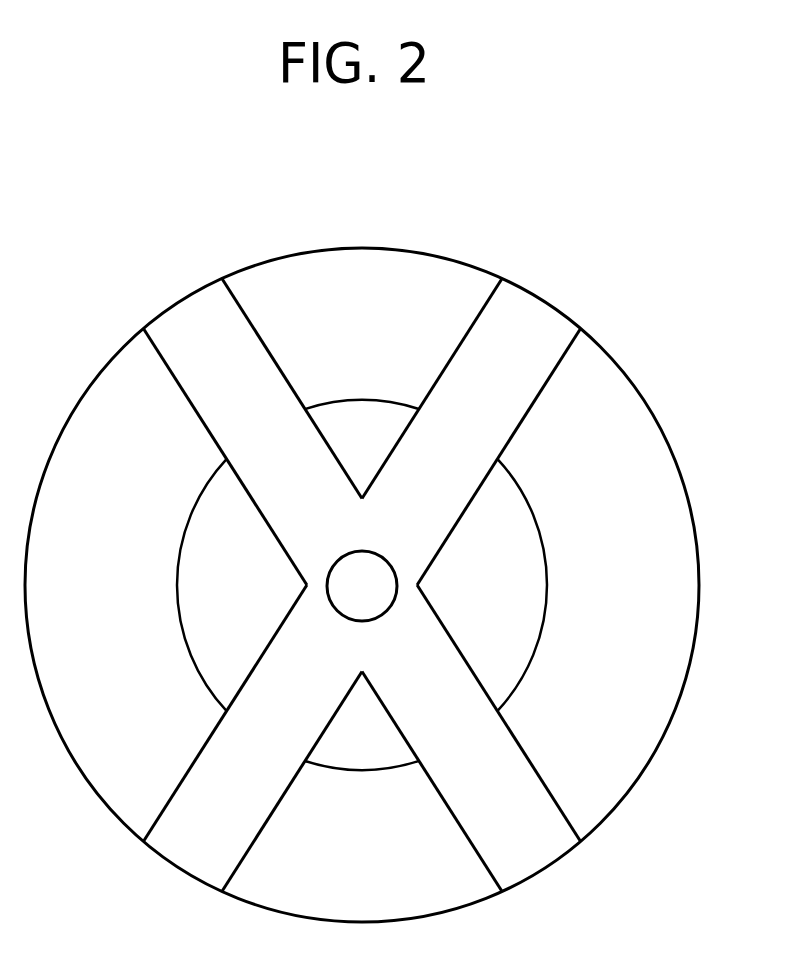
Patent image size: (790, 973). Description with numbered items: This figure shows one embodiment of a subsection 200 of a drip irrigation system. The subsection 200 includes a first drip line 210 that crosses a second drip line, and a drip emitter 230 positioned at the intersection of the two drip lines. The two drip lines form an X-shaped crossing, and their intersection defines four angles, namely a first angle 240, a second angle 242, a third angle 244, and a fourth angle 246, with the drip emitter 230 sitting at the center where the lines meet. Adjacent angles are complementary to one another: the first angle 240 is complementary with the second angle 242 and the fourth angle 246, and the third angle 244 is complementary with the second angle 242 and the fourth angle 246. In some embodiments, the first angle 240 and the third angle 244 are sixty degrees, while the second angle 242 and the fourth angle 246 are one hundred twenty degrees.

The subsection 200 is at (163, 289).
The first drip line 210 is at (250, 383).
The drip emitter 230 is at (525, 393).
The first angle 240 is at (389, 452).
The second angle 242 is at (529, 599).
The third angle 244 is at (383, 747).
The fourth angle 246 is at (256, 599).